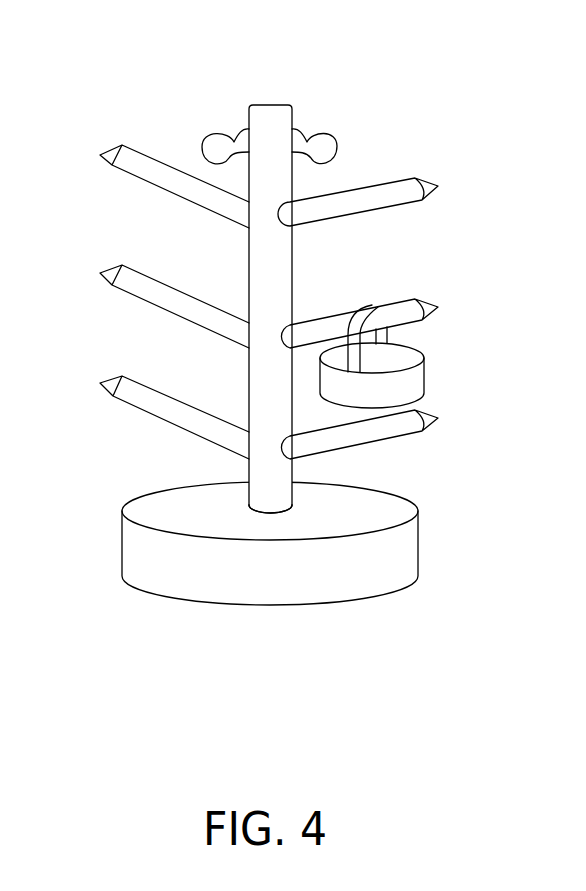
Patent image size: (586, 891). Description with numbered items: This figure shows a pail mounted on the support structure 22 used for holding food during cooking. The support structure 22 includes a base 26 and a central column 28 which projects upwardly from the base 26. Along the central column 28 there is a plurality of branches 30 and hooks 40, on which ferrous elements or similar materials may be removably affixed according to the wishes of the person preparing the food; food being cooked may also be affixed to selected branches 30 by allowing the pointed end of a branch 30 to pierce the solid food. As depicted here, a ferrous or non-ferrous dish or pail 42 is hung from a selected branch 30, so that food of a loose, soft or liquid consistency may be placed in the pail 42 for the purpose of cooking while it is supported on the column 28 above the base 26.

The support structure 22 is at (274, 90).
The base 26 is at (400, 542).
The central column 28 is at (265, 493).
The branches 30 is at (100, 157).
The hooks 40 is at (231, 141).
The pail 42 is at (417, 380).